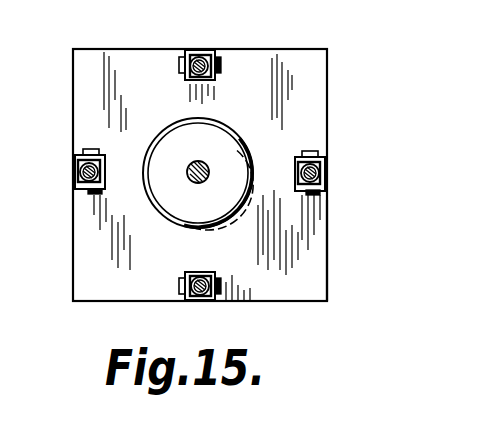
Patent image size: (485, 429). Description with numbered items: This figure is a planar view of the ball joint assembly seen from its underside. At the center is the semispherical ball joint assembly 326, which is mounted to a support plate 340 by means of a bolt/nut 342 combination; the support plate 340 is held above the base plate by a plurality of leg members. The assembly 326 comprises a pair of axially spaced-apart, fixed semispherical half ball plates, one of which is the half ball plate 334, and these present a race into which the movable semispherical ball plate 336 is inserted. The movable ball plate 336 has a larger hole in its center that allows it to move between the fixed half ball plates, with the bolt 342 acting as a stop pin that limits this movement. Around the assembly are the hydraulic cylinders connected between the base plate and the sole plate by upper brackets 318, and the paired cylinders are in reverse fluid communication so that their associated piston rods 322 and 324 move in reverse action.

The upper bracket 318 is at (200, 160).
The piston rod 322 is at (195, 50).
The piston rod 324 is at (76, 181).
The semispherical ball joint assembly 326 is at (228, 165).
The semispherical half ball plate 334 is at (250, 207).
The movable semispherical ball plate 336 is at (232, 120).
The support plate 340 is at (325, 276).
The bolt/nut combination 342 is at (190, 181).